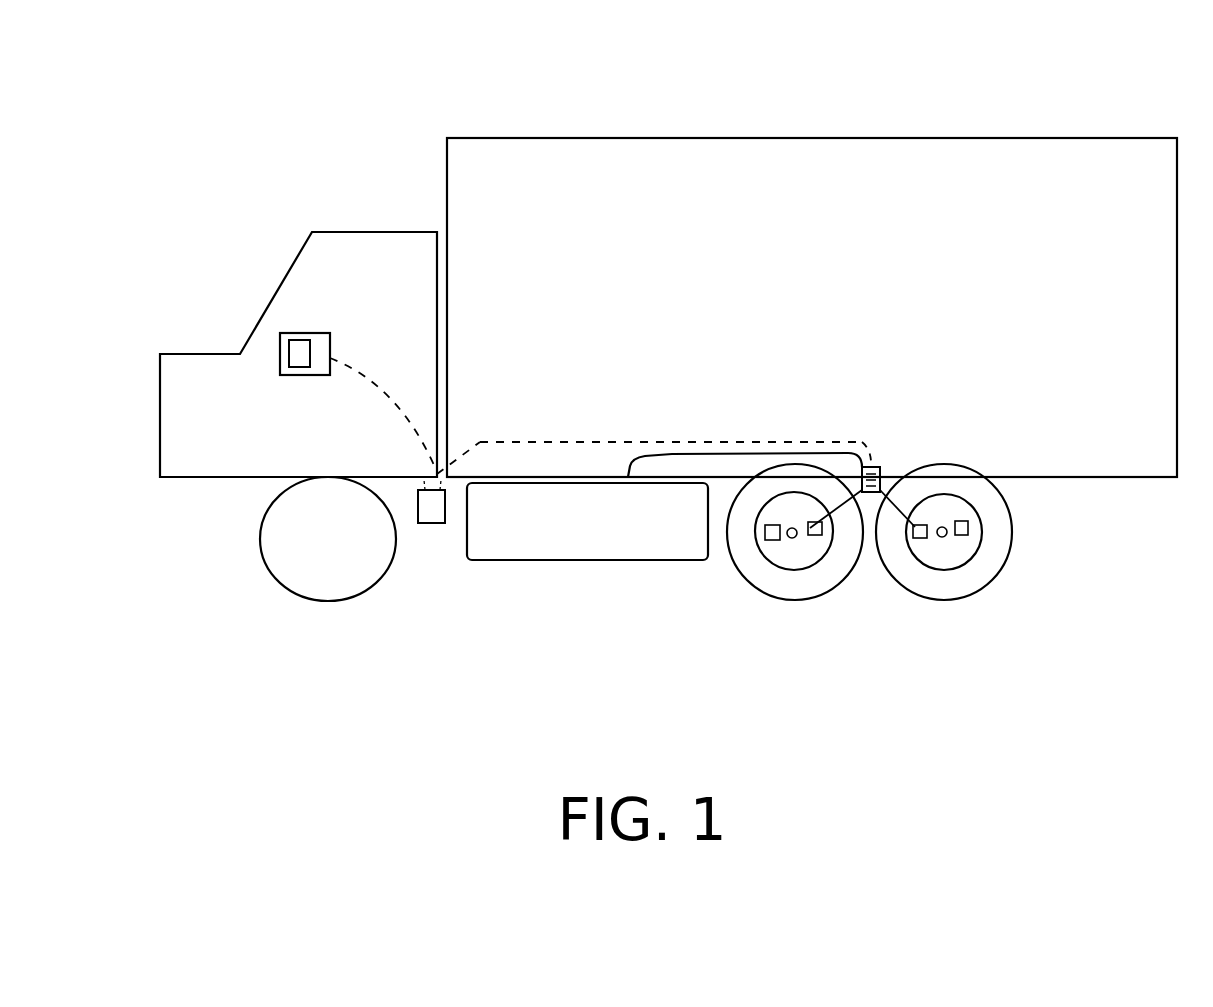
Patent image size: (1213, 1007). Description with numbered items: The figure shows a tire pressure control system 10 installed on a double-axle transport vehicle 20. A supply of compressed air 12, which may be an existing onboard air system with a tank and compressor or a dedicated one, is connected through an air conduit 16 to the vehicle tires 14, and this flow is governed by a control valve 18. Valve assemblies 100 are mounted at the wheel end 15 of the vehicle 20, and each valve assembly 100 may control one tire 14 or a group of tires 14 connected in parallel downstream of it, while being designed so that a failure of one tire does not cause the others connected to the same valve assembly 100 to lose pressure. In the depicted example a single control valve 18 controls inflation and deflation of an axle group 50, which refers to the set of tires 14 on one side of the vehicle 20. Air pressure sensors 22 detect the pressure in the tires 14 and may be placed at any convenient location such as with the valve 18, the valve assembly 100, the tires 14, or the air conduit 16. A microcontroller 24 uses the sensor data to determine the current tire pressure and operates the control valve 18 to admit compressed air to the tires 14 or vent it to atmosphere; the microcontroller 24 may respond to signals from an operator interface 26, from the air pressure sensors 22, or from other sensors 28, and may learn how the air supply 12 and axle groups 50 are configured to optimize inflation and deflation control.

The tire pressure control system 10 is at (708, 397).
The supply of compressed air 12 is at (527, 546).
The vehicle tires 14 is at (743, 565).
The wheel end 15 is at (972, 508).
The air conduit 16 is at (832, 453).
The control valve 18 is at (883, 473).
The transport vehicle 20 is at (810, 163).
The air pressure sensors 22 is at (885, 476).
The microcontroller 24 is at (432, 508).
The operator interface 26 is at (317, 345).
The other sensors 28 is at (297, 353).
The axle group 50 is at (1002, 523).
The valve assembly 100 is at (765, 557).